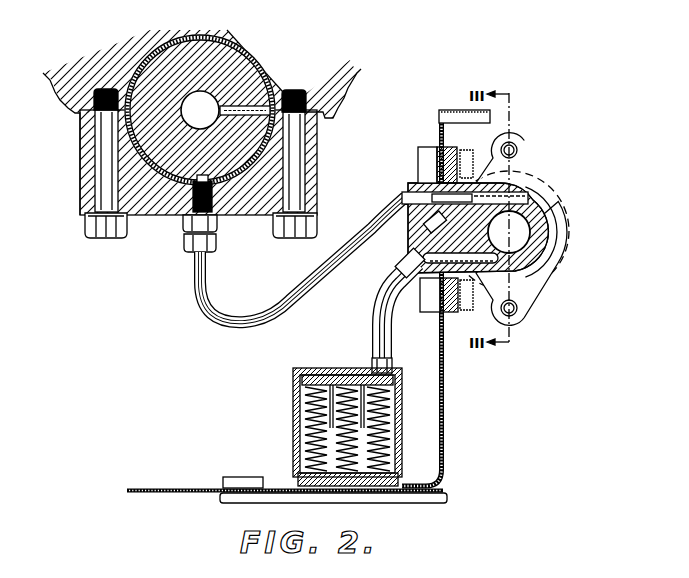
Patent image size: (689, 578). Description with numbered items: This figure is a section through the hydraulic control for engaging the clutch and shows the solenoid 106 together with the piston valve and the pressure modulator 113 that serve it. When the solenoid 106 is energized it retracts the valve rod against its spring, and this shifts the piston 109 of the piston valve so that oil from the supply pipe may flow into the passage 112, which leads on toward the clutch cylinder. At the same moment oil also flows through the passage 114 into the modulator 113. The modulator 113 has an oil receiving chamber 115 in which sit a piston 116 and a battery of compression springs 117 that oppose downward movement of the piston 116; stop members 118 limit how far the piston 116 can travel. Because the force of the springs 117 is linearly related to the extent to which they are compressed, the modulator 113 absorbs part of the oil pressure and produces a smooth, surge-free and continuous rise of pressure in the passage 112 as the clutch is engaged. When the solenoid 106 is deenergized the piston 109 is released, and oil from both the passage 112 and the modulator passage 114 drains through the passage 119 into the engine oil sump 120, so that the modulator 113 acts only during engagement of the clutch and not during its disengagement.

The solenoid 106 is at (518, 229).
The piston 109 is at (522, 233).
The passage 112 is at (392, 204).
The modulator 113 is at (376, 427).
The passage 114 is at (447, 262).
The oil receiving chamber 115 is at (367, 368).
The piston 116 is at (302, 380).
The compression springs 117 is at (302, 402).
The stop members 118 is at (302, 418).
The passage 119 is at (507, 183).
The engine oil sump 120 is at (428, 373).